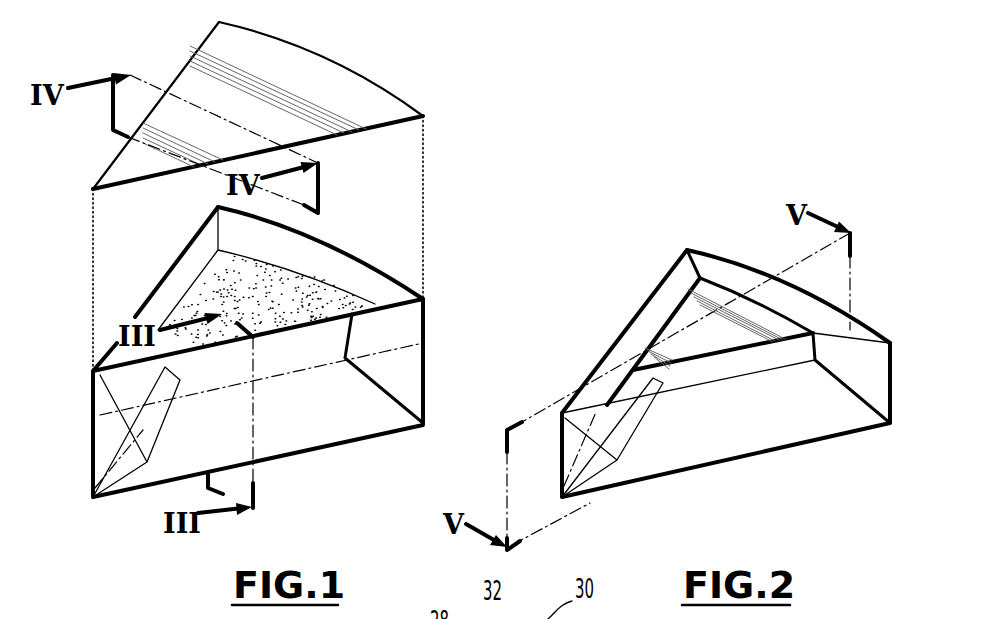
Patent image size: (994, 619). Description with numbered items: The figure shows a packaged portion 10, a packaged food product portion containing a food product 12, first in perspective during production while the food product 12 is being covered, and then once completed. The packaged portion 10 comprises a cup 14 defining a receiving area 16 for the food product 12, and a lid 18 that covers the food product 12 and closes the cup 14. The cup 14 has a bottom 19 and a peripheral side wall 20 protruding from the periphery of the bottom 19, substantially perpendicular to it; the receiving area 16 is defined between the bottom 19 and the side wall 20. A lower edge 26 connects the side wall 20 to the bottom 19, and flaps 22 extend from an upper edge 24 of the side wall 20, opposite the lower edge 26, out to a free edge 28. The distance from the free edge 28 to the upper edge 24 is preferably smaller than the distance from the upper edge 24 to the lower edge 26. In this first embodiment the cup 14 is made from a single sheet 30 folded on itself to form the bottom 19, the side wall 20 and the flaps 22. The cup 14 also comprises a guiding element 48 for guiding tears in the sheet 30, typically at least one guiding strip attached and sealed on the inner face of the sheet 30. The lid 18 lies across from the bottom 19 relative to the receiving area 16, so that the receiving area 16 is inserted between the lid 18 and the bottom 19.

In FIG. 1, the packaged portion 10 is at (312, 346).
In FIG. 2, the packaged portion 10 is at (749, 331).
In FIG. 1, the food product 12 is at (297, 288).
In FIG. 2, the food product 12 is at (726, 373).
In FIG. 1, the cup 14 is at (291, 455).
In FIG. 1, the receiving area 16 is at (182, 313).
In FIG. 1, the lid 18 is at (322, 70).
In FIG. 2, the lid 18 is at (788, 323).
In FIG. 1, the bottom 19 is at (363, 440).
In FIG. 2, the bottom 19 is at (835, 435).
In FIG. 1, the peripheral side wall 20 is at (145, 480).
In FIG. 2, the peripheral side wall 20 is at (645, 466).
In FIG. 1, the flaps 22 is at (377, 284).
In FIG. 2, the flaps 22 is at (731, 270).
In FIG. 1, the upper edge 24 is at (267, 381).
In FIG. 2, the upper edge 24 is at (672, 395).
In FIG. 1, the lower edge 26 is at (260, 462).
In FIG. 2, the lower edge 26 is at (736, 462).
In FIG. 1, the free edge 28 is at (320, 310).
In FIG. 2, the free edge 28 is at (690, 357).
In FIG. 1, the sheet 30 is at (418, 362).
In FIG. 2, the sheet 30 is at (871, 388).
In FIG. 1, the guiding element 48 is at (162, 388).
In FIG. 2, the guiding element 48 is at (653, 392).